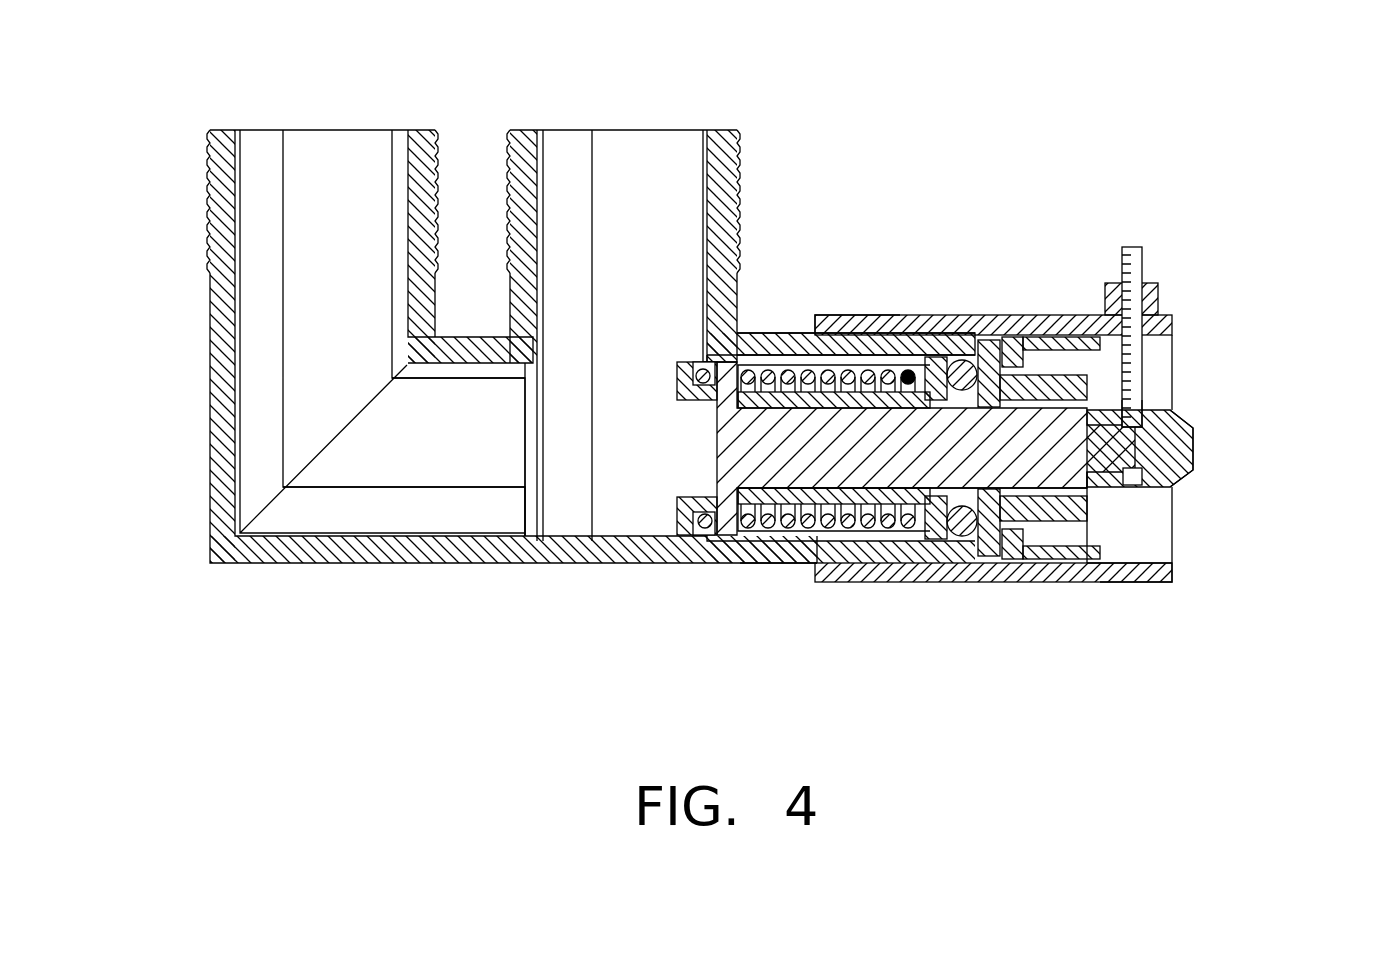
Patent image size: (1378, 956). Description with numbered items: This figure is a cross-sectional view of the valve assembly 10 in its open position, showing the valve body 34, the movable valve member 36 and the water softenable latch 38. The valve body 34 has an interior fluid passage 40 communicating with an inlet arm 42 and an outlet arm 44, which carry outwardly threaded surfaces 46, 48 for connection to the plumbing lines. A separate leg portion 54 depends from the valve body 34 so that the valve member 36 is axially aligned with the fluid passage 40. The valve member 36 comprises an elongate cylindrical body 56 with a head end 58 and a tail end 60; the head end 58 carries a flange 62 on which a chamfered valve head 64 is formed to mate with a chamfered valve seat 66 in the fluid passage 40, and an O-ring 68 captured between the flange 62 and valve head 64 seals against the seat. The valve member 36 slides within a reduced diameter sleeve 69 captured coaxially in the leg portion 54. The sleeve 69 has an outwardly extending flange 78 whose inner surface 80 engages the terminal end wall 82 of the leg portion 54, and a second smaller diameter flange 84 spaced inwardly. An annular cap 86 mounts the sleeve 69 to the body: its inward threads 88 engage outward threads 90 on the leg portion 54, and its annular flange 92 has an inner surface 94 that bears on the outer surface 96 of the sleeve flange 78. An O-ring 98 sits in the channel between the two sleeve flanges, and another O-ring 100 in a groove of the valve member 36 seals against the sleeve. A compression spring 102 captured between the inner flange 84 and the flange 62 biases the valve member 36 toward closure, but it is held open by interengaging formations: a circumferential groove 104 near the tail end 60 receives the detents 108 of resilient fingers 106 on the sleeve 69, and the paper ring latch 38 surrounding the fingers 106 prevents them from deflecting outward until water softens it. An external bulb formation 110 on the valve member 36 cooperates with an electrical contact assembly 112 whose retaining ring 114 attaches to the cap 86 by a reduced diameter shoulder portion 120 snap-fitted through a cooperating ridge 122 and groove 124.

The valve assembly 10 is at (1196, 112).
The valve body 34 is at (340, 568).
The valve member 36 is at (819, 425).
The water softenable latch 38 is at (1095, 575).
The fluid passage 40 is at (433, 465).
The inlet arm 42 is at (617, 185).
The outlet arm 44 is at (312, 323).
The outwardly threaded surface 46 is at (512, 180).
The outwardly threaded surface 48 is at (210, 192).
The leg portion 54 is at (772, 556).
The elongate cylindrical body 56 is at (857, 440).
The head end 58 is at (768, 490).
The tail end 60 is at (1100, 490).
The flange 62 is at (726, 532).
The chamfered valve head 64 is at (668, 358).
The chamfered valve seat 66 is at (532, 460).
The O-ring 68 is at (672, 372).
The sleeve 69 is at (895, 340).
The outwardly extending flange 78 is at (985, 545).
The inner surface 80 is at (960, 550).
The terminal end wall 82 is at (963, 358).
The second smaller diameter flange 84 is at (927, 545).
The annular cap 86 is at (946, 310).
The inward threads 88 is at (902, 372).
The outward threads 90 is at (818, 575).
The annular flange 92 is at (1045, 338).
The inner surface 94 is at (1000, 330).
The outer surface 96 is at (1008, 542).
The O-ring 98 is at (932, 396).
The O-ring 100 is at (873, 560).
The compression spring 102 is at (782, 368).
The circumferential groove 104 is at (1180, 448).
The resilient fingers 106 is at (1095, 522).
The detent 108 is at (1142, 478).
The external formation 110 is at (1195, 450).
The electrical contact assembly 112 is at (1162, 352).
The retaining ring 114 is at (1192, 578).
The reduced diameter shoulder portion 120 is at (1135, 415).
The ridge 122 is at (1080, 555).
The groove 124 is at (1070, 338).